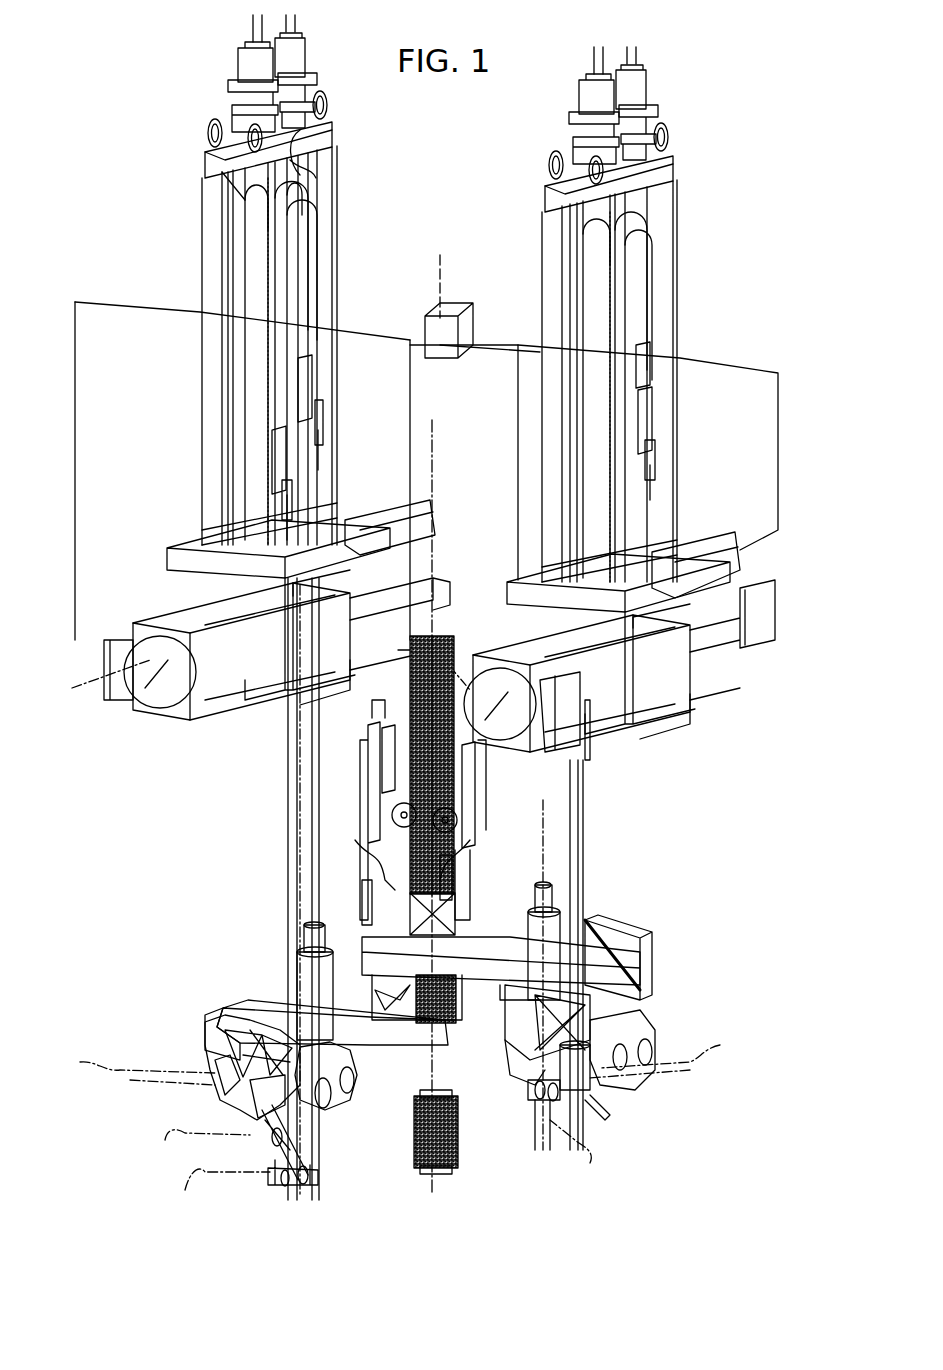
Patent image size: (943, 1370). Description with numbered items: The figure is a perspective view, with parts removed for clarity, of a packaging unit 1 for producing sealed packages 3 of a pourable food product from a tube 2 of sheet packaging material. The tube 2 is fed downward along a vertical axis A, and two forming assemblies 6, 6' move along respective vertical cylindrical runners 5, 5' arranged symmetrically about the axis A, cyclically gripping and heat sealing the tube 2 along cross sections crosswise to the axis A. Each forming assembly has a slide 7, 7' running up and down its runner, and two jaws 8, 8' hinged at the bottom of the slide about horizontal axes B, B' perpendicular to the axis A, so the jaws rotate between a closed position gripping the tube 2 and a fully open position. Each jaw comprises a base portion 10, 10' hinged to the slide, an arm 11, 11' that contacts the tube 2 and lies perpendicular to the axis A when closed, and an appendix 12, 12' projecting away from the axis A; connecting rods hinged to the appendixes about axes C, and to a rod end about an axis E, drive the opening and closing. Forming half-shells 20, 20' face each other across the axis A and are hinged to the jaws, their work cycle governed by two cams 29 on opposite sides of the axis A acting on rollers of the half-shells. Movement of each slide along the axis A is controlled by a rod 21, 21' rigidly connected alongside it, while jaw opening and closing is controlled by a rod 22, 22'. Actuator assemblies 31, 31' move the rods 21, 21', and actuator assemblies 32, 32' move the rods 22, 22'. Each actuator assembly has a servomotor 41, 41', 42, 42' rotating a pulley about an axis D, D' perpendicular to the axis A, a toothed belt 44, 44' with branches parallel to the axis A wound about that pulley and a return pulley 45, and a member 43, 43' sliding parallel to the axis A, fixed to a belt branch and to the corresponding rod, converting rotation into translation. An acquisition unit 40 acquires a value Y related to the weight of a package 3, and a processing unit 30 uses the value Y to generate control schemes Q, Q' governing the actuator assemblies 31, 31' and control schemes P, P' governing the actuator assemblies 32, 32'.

The packaging unit 1 is at (721, 103).
The tube 2 is at (434, 645).
The sealed package 3 is at (456, 1140).
The runner 5 is at (284, 902).
The runner 5' is at (530, 869).
The forming assembly 6 is at (323, 969).
The forming assembly 6' is at (650, 891).
The slide 7 is at (325, 971).
The slide 7' is at (569, 975).
The jaw 8 is at (501, 1046).
The jaw 8' is at (565, 891).
The base portion 10 is at (215, 1067).
The base portion 10' is at (603, 1033).
The arm 11 is at (300, 1062).
The arm 11' is at (642, 957).
The appendix 12 is at (247, 1114).
The appendix 12' is at (544, 1095).
The forming half-shell 20 is at (363, 1075).
The forming half-shell 20' is at (436, 851).
The rod 21 is at (360, 712).
The rod 21' is at (612, 741).
The rod 22 is at (265, 889).
The rod 22' is at (617, 955).
The cam 29 is at (383, 724).
The processing unit 30 is at (420, 316).
The actuator assembly 31 is at (307, 471).
The actuator assembly 31' is at (648, 447).
The actuator assembly 32 is at (237, 567).
The actuator assembly 32' is at (605, 614).
The acquisition unit 40 is at (455, 318).
The servomotor 41 is at (390, 496).
The servomotor 41' is at (710, 538).
The servomotor 42 is at (266, 631).
The servomotor 42' is at (619, 666).
The member 43 is at (269, 419).
The member 43' is at (679, 408).
The toothed belt 44 is at (232, 280).
The toothed belt 44' is at (636, 314).
The return pulley 45 is at (287, 205).
The axis A is at (432, 490).
The axis B is at (146, 1062).
The axis B' is at (669, 1049).
The axis C is at (373, 1142).
The axis D is at (101, 674).
The axis D' is at (459, 660).
The axis E is at (215, 1185).
The control scheme P is at (71, 603).
The control scheme P' is at (494, 600).
The control scheme Q is at (398, 486).
The control scheme Q' is at (776, 555).
The value Y is at (451, 255).